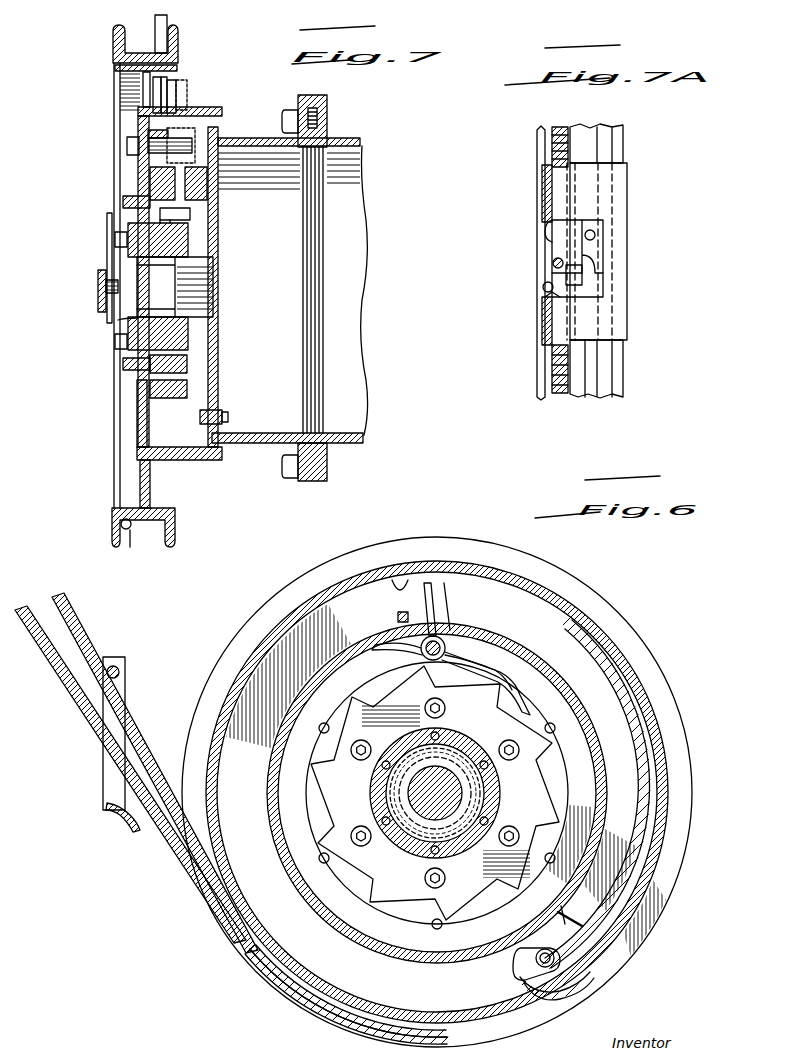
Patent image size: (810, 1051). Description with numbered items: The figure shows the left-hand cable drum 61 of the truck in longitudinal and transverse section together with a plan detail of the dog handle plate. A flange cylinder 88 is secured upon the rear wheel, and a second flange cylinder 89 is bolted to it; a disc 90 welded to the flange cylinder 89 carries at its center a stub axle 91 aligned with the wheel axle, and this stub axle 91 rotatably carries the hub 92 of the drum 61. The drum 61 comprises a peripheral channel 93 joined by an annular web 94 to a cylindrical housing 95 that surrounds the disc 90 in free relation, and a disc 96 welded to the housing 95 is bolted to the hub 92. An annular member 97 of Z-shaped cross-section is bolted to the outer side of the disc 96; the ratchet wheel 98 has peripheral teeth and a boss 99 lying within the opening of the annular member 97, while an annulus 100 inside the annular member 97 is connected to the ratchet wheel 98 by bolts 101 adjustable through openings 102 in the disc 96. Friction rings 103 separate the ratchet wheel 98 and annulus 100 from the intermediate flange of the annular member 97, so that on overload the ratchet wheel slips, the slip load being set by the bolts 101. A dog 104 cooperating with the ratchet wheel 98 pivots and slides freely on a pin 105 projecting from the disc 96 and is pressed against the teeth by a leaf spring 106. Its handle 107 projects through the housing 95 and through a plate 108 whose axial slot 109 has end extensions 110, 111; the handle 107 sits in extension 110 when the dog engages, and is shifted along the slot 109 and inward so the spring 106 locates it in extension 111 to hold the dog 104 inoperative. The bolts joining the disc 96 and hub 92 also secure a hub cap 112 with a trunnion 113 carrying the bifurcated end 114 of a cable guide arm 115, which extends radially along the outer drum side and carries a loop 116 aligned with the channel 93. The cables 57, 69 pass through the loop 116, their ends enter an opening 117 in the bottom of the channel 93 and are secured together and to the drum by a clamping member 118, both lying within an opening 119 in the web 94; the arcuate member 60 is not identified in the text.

In FIG. 7, the cable 57 is at (128, 530).
In FIG. 6, the cable 57 is at (78, 625).
In FIG. 6, the arcuate member 60 is at (102, 793).
In FIG. 7, the drum 61 is at (112, 42).
In FIG. 6, the drum 61 is at (630, 645).
In FIG. 7, the cable 69 is at (167, 26).
In FIG. 6, the cable 69 is at (62, 672).
In FIG. 7, the flange cylinder 88 is at (345, 145).
In FIG. 7, the flange cylinder 89 is at (247, 137).
In FIG. 7, the disc 90 is at (218, 226).
In FIG. 7A, the disc 90 is at (618, 386).
In FIG. 7, the stub axle 91 is at (183, 290).
In FIG. 6, the stub axle 91 is at (455, 840).
In FIG. 7, the hub 92 is at (188, 343).
In FIG. 6, the hub 92 is at (418, 848).
In FIG. 7, the peripheral channel 93 is at (128, 70).
In FIG. 6, the peripheral channel 93 is at (545, 575).
In FIG. 7, the annular web 94 is at (150, 494).
In FIG. 7A, the annular web 94 is at (543, 192).
In FIG. 6, the annular web 94 is at (313, 617).
In FIG. 7, the cylindrical housing 95 is at (205, 460).
In FIG. 7A, the cylindrical housing 95 is at (590, 315).
In FIG. 6, the cylindrical housing 95 is at (604, 793).
In FIG. 7, the disc 96 is at (137, 422).
In FIG. 7A, the disc 96 is at (538, 373).
In FIG. 7, the annular member 97 is at (215, 194).
In FIG. 7A, the annular member 97 is at (588, 395).
In FIG. 7, the ratchet wheel 98 is at (150, 195).
In FIG. 7A, the ratchet wheel 98 is at (560, 393).
In FIG. 6, the ratchet wheel 98 is at (494, 726).
In FIG. 7, the boss 99 is at (170, 222).
In FIG. 7, the annulus 100 is at (185, 218).
In FIG. 7, the bolts 101 is at (182, 215).
In FIG. 6, the bolts 101 is at (362, 760).
In FIG. 7, the openings 102 is at (138, 203).
In FIG. 7, the friction rings 103 is at (188, 386).
In FIG. 7, the dog 104 is at (140, 162).
In FIG. 6, the dog 104 is at (500, 655).
In FIG. 7, the pin 105 is at (128, 147).
In FIG. 6, the pin 105 is at (372, 647).
In FIG. 6, the leaf spring 106 is at (520, 665).
In FIG. 7, the handle 107 is at (168, 78).
In FIG. 7A, the handle 107 is at (554, 263).
In FIG. 6, the handle 107 is at (455, 585).
In FIG. 7, the plate 108 is at (183, 95).
In FIG. 7A, the plate 108 is at (548, 300).
In FIG. 6, the plate 108 is at (398, 617).
In FIG. 7, the slot 109 is at (140, 100).
In FIG. 7A, the slot 109 is at (548, 225).
In FIG. 6, the slot 109 is at (404, 578).
In FIG. 7, the slot extension 110 is at (170, 86).
In FIG. 7A, the slot extension 110 is at (566, 275).
In FIG. 7, the slot extension 111 is at (188, 103).
In FIG. 7A, the slot extension 111 is at (605, 277).
In FIG. 7, the hub cap 112 is at (118, 319).
In FIG. 7, the trunnion 113 is at (105, 288).
In FIG. 7, the bifurcated end 114 is at (100, 276).
In FIG. 7, the cable guide arm 115 is at (107, 230).
In FIG. 6, the loop 116 is at (110, 768).
In FIG. 6, the opening 117 is at (555, 985).
In FIG. 6, the clamping member 118 is at (512, 965).
In FIG. 6, the opening 119 is at (570, 917).